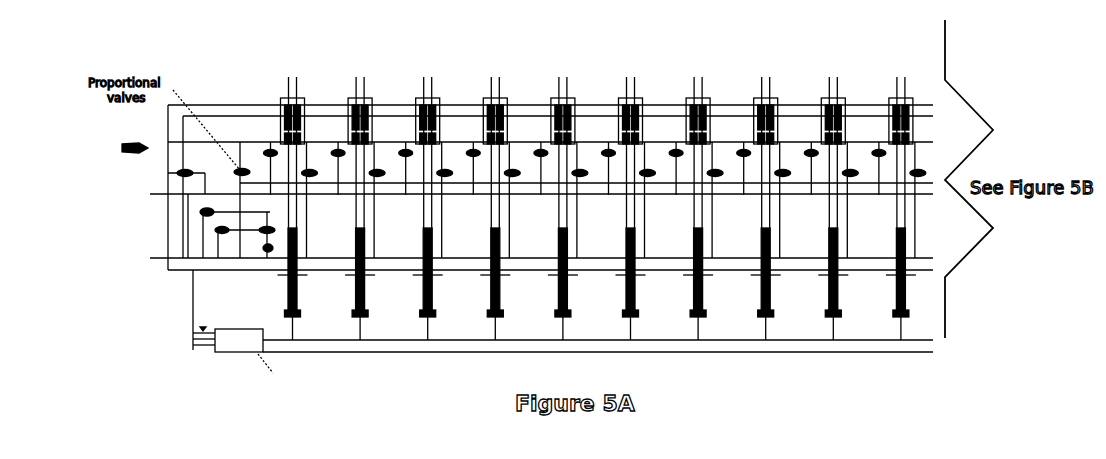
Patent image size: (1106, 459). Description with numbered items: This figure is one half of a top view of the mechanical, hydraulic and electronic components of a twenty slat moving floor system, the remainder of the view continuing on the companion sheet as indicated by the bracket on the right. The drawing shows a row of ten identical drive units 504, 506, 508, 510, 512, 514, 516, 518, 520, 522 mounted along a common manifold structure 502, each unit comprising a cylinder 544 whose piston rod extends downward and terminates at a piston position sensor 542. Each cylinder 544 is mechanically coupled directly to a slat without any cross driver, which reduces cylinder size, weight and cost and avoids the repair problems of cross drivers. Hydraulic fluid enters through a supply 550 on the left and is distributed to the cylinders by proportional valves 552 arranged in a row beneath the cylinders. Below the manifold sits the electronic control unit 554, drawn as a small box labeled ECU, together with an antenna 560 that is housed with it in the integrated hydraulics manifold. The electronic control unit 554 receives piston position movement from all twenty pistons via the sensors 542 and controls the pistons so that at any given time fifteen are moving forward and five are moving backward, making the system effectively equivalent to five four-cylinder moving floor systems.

The valve manifold 502 is at (285, 78).
The actuator unit 504 is at (288, 197).
The actuator unit 506 is at (359, 197).
The actuator unit 508 is at (427, 197).
The actuator unit 510 is at (494, 197).
The actuator unit 512 is at (562, 197).
The actuator unit 514 is at (630, 197).
The actuator unit 516 is at (697, 197).
The actuator unit 518 is at (765, 197).
The actuator unit 520 is at (832, 197).
The actuator unit 522 is at (900, 197).
The piston position sensor 542 is at (325, 323).
The cylinder 544 is at (256, 124).
The fluid supply 550 is at (122, 150).
The proportional valve 552 is at (238, 170).
The electronic control unit 554 is at (240, 353).
The antenna 560 is at (197, 330).